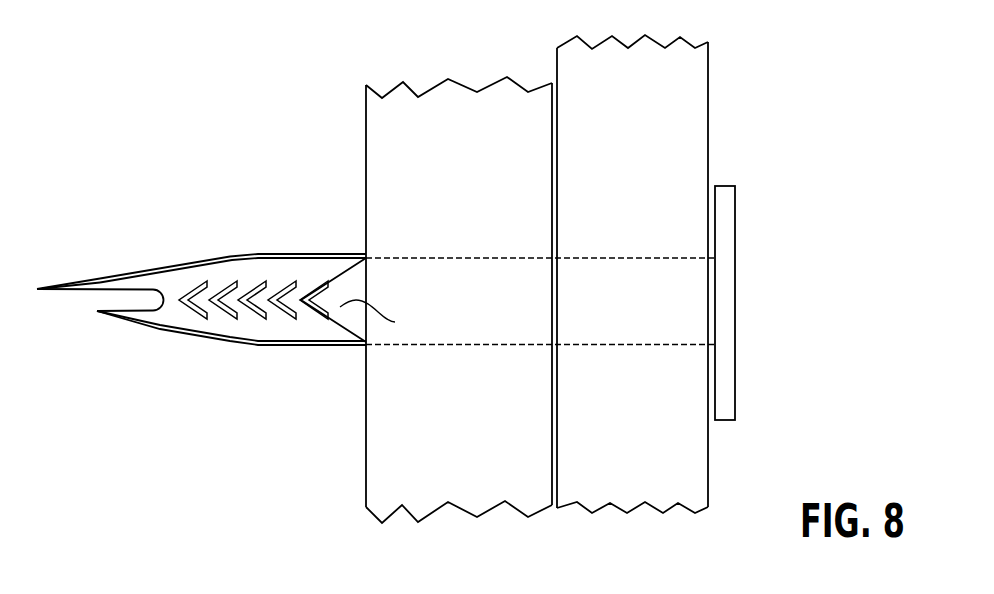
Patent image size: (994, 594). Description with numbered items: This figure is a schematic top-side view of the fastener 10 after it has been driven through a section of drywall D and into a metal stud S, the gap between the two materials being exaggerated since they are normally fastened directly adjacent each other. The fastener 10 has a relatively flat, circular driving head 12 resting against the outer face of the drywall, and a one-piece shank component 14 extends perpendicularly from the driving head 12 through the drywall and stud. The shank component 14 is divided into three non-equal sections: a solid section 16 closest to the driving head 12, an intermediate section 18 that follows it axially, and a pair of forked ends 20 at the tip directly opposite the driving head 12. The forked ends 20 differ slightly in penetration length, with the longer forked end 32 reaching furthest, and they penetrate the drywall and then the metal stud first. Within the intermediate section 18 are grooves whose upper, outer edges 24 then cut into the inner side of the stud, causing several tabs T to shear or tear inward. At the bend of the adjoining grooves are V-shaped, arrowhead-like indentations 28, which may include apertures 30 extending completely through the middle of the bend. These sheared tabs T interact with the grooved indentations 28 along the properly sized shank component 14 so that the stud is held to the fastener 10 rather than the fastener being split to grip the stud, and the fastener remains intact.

The fastener 10 is at (601, 279).
The driving head 12 is at (728, 221).
The shank component 14 is at (450, 222).
The solid section 16 is at (552, 306).
The intermediate section 18 is at (330, 335).
The forked ends 20 is at (225, 282).
The outer edges 24 is at (344, 256).
The indentations 28 is at (240, 283).
The apertures 30 is at (272, 294).
The longer forked end 32 is at (78, 280).